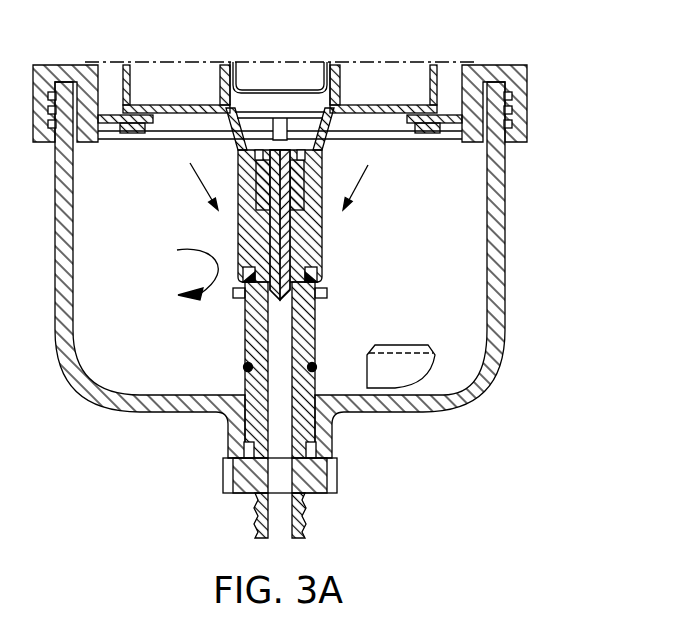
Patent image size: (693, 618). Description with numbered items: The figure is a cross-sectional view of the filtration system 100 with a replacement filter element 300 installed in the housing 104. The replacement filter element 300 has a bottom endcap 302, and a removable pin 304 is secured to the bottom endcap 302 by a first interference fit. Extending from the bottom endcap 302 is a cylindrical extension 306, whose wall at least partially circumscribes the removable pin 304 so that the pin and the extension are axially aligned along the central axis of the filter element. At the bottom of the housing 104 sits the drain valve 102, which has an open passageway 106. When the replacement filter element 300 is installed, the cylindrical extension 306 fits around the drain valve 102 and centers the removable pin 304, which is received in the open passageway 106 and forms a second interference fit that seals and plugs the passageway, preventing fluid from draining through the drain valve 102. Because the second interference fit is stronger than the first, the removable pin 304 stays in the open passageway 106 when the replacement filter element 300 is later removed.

The filtration system 100 is at (332, 274).
The drain valve 102 is at (240, 480).
The housing 104 is at (500, 253).
The open passageway 106 is at (278, 453).
The replacement filter element 300 is at (388, 93).
The bottom endcap 302 is at (412, 136).
The removable pin 304 is at (285, 250).
The cylindrical extension 306 is at (320, 226).